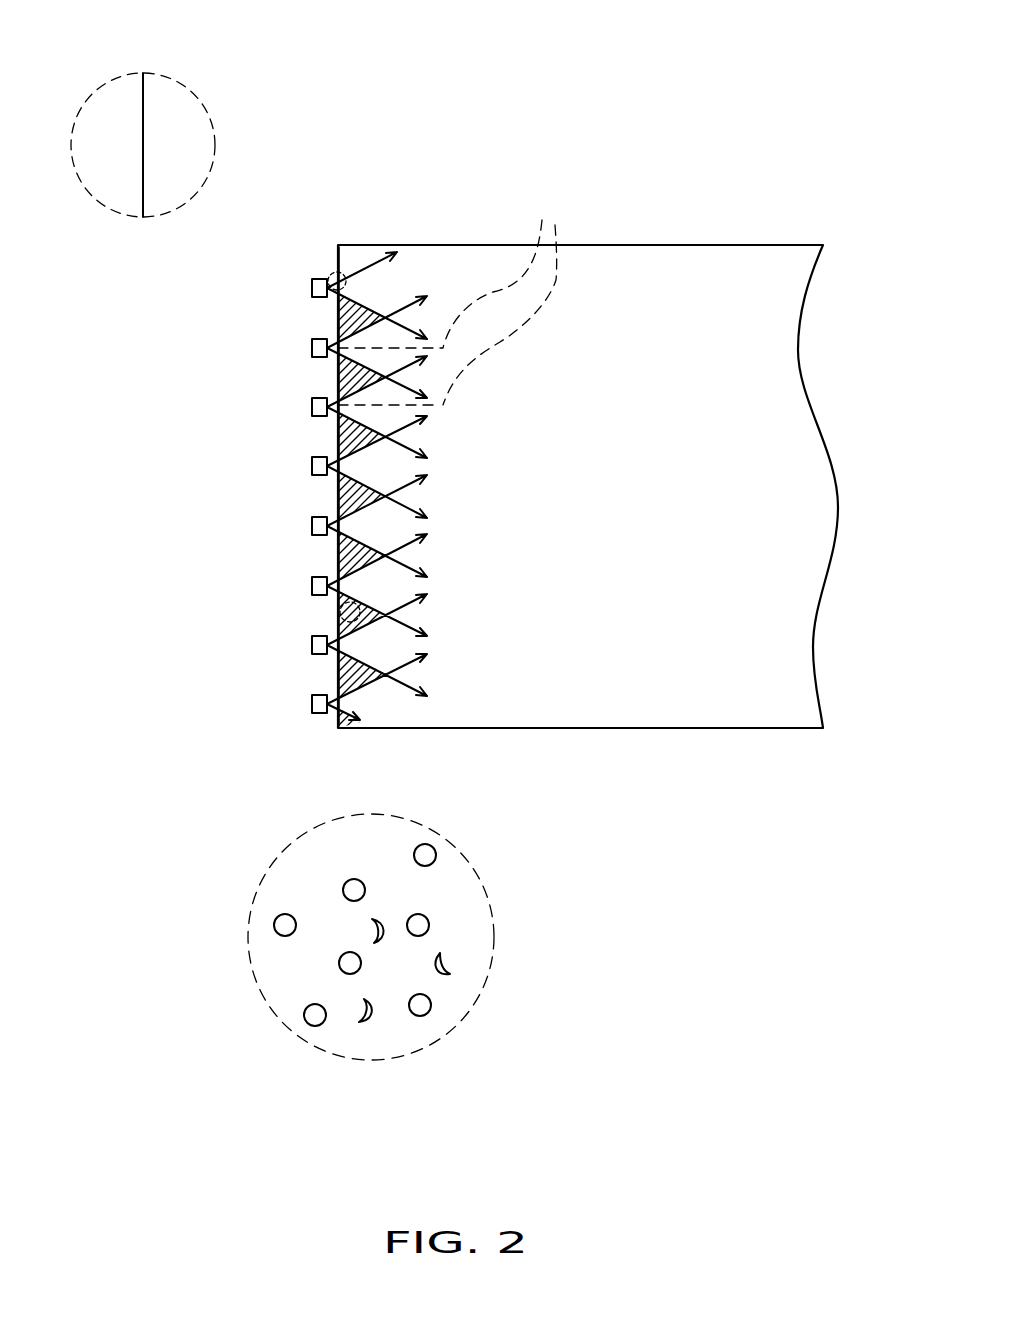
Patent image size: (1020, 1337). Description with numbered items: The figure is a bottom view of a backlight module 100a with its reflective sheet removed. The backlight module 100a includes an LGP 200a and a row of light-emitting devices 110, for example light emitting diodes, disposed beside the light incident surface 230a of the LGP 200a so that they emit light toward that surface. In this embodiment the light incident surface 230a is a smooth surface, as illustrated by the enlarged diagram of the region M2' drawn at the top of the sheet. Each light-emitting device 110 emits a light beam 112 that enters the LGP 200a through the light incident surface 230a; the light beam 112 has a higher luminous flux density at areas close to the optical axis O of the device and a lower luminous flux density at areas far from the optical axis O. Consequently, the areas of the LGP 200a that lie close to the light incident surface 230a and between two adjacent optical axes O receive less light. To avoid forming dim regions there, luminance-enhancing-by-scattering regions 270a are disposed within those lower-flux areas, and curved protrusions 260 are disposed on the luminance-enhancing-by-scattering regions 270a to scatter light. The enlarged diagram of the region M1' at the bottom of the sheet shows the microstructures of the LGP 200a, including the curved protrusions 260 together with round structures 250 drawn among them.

The backlight module 100a is at (880, 806).
The LGP 200a is at (750, 272).
The luminance-enhancing-by-scattering regions 270a is at (337, 432).
The light incident surface 230a is at (127, 108).
The region M2' is at (208, 177).
The region M1' is at (425, 827).
The light-emitting devices 110 is at (311, 348).
The light beam 112 is at (398, 298).
The optical axis O is at (447, 292).
The circular microstructures 250 is at (418, 1010).
The curved protrusions 260 is at (452, 970).